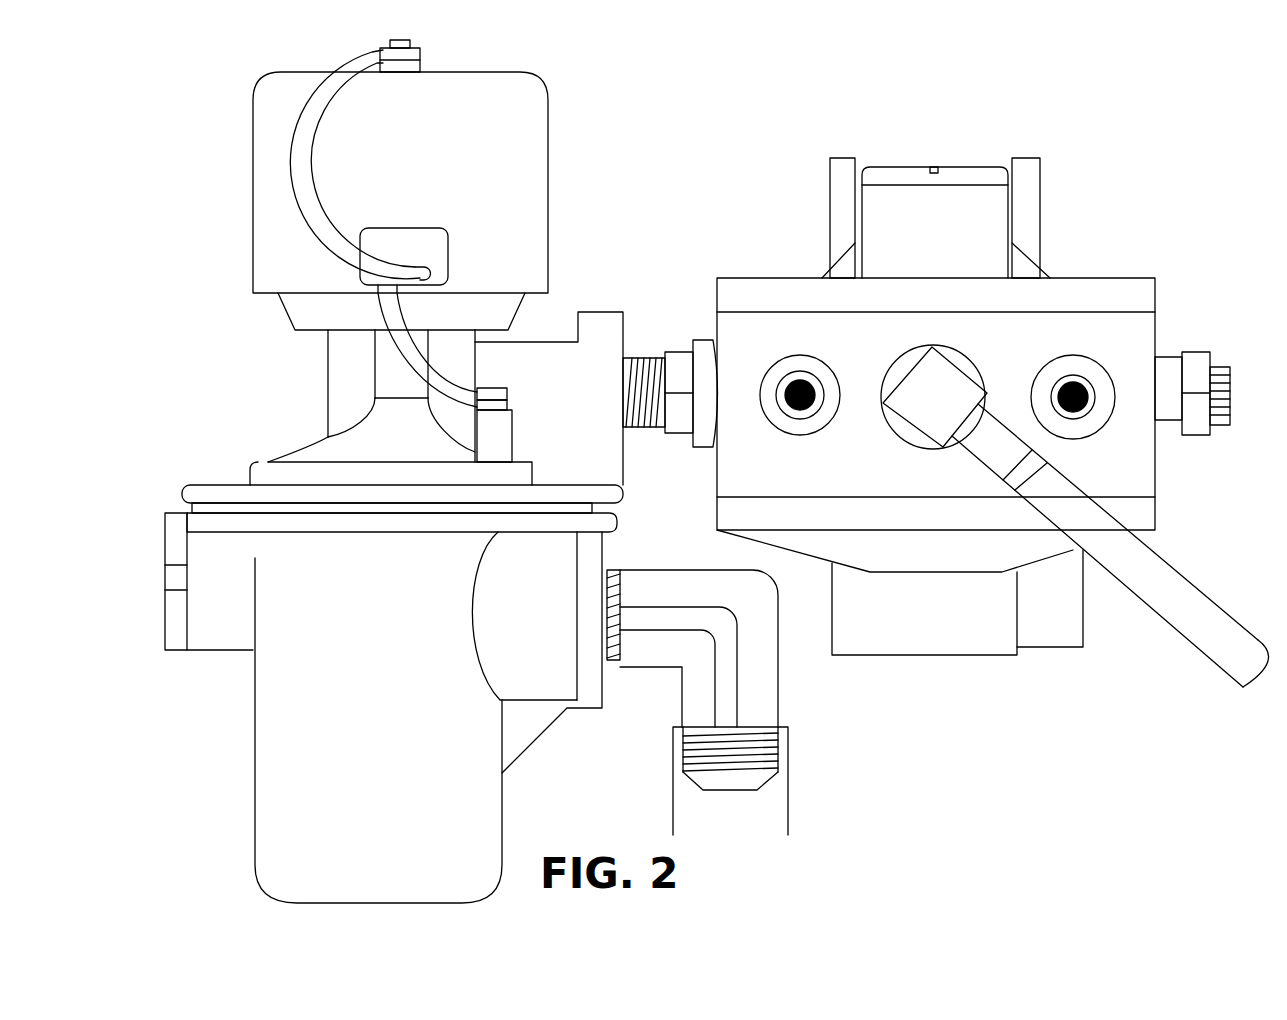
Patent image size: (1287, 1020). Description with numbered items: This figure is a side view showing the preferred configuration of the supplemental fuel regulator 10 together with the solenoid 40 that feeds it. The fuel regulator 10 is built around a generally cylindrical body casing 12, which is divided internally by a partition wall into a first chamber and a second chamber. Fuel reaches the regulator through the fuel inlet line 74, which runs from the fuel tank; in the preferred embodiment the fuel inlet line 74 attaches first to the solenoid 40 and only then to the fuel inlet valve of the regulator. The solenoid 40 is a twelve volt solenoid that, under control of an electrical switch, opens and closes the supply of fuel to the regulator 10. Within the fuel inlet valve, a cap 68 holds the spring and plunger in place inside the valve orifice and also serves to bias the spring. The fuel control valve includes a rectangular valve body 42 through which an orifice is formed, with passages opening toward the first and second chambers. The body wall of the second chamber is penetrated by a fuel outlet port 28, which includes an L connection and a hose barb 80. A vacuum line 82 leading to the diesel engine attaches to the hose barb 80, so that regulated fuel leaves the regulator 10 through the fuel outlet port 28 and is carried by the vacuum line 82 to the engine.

The fuel regulator 10 is at (680, 271).
The body casing 12 is at (1158, 357).
The fuel outlet port 28 is at (937, 398).
The solenoid 40 is at (236, 207).
The valve body 42 is at (255, 687).
The cap 68 is at (935, 168).
The fuel inlet line 74 is at (790, 782).
The hose barb 80 is at (1002, 455).
The vacuum line 82 is at (1213, 652).